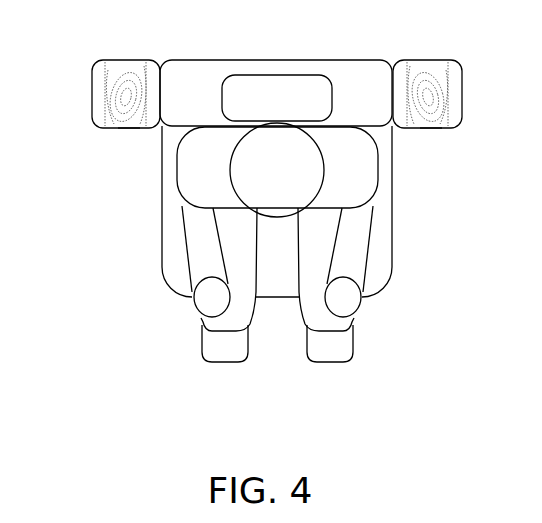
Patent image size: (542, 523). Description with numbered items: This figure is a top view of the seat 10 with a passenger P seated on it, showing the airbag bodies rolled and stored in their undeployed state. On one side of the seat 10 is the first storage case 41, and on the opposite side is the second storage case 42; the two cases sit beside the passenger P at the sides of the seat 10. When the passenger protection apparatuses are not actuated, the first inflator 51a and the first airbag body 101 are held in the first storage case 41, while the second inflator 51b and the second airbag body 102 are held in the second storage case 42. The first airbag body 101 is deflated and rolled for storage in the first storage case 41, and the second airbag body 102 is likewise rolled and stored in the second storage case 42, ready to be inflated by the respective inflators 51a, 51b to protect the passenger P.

The seat 10 is at (315, 60).
The first storage case 41 is at (452, 90).
The second storage case 42 is at (102, 93).
The first inflator 51a is at (430, 60).
The second inflator 51b is at (120, 60).
The first airbag body 101 is at (432, 128).
The second airbag body 102 is at (130, 128).
The passenger P is at (365, 183).